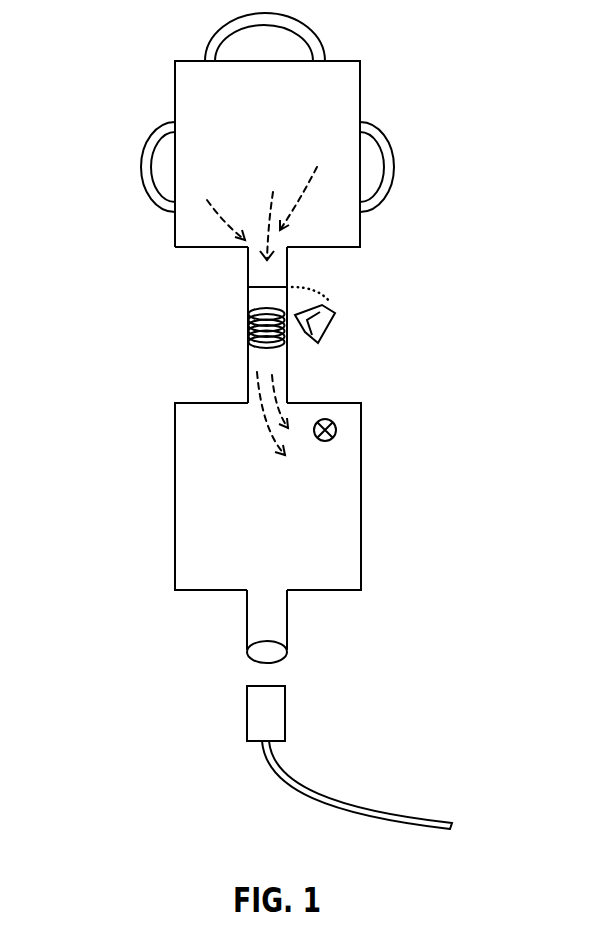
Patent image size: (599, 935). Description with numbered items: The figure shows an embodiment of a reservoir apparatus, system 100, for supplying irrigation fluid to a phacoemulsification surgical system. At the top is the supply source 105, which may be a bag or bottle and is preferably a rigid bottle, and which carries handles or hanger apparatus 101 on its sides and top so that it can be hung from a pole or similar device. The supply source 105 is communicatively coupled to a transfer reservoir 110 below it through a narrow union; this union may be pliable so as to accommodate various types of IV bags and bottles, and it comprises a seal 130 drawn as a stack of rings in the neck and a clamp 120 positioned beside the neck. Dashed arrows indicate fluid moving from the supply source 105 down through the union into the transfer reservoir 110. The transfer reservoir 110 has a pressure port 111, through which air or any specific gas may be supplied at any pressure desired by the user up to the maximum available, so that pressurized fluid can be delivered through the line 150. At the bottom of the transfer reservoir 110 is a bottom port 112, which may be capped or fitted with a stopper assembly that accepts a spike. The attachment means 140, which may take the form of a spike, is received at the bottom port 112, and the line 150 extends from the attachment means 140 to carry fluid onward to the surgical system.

The system 100 is at (271, 335).
The handles or hanger apparatus 101 is at (140, 165).
The supply source 105 is at (267, 136).
The transfer reservoir 110 is at (268, 481).
The pressure port 111 is at (336, 430).
The bottom port 112 is at (287, 650).
The clamp 120 is at (327, 328).
The seal 130 is at (240, 307).
The attachment means 140 is at (247, 714).
The line 150 is at (287, 785).